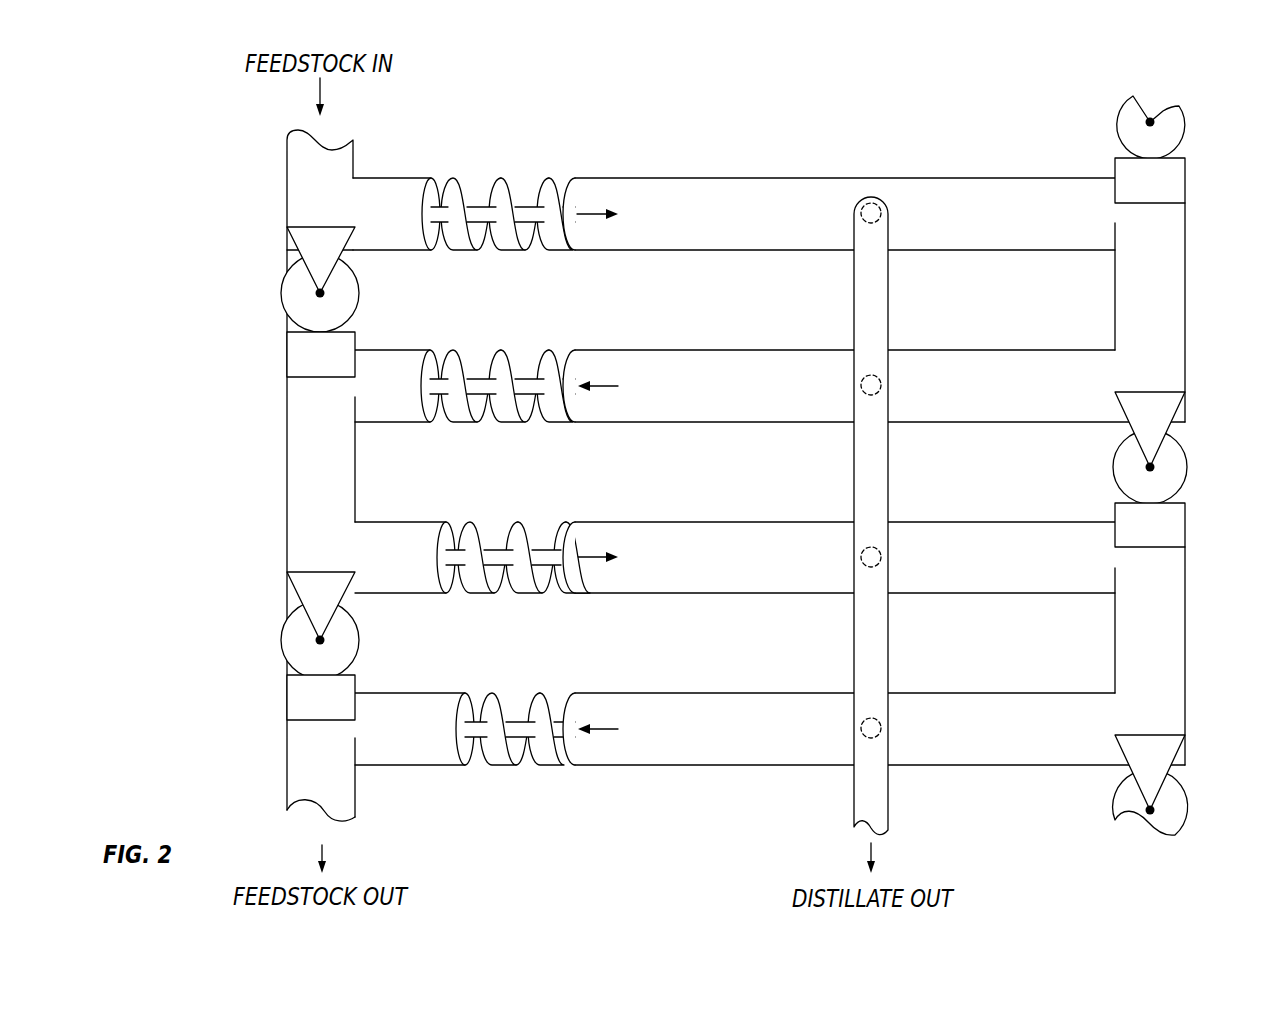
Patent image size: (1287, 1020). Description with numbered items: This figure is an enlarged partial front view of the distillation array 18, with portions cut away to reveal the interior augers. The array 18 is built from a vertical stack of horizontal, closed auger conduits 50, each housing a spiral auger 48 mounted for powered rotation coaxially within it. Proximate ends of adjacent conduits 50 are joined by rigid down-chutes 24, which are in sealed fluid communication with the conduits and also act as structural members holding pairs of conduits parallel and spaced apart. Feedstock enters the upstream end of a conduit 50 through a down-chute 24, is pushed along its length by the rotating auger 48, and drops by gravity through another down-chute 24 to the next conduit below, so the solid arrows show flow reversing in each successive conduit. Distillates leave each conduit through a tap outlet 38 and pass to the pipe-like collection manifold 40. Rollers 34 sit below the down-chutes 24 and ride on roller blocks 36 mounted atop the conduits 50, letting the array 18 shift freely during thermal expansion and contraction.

The distillation array 18 is at (927, 130).
The down-chute 24 is at (292, 172).
The roller 34 is at (292, 297).
The roller block 36 is at (292, 353).
The distillate tap outlet 38 is at (870, 201).
The collection manifold 40 is at (890, 472).
The spiral auger 48 is at (500, 183).
The auger conduit 50 is at (652, 180).